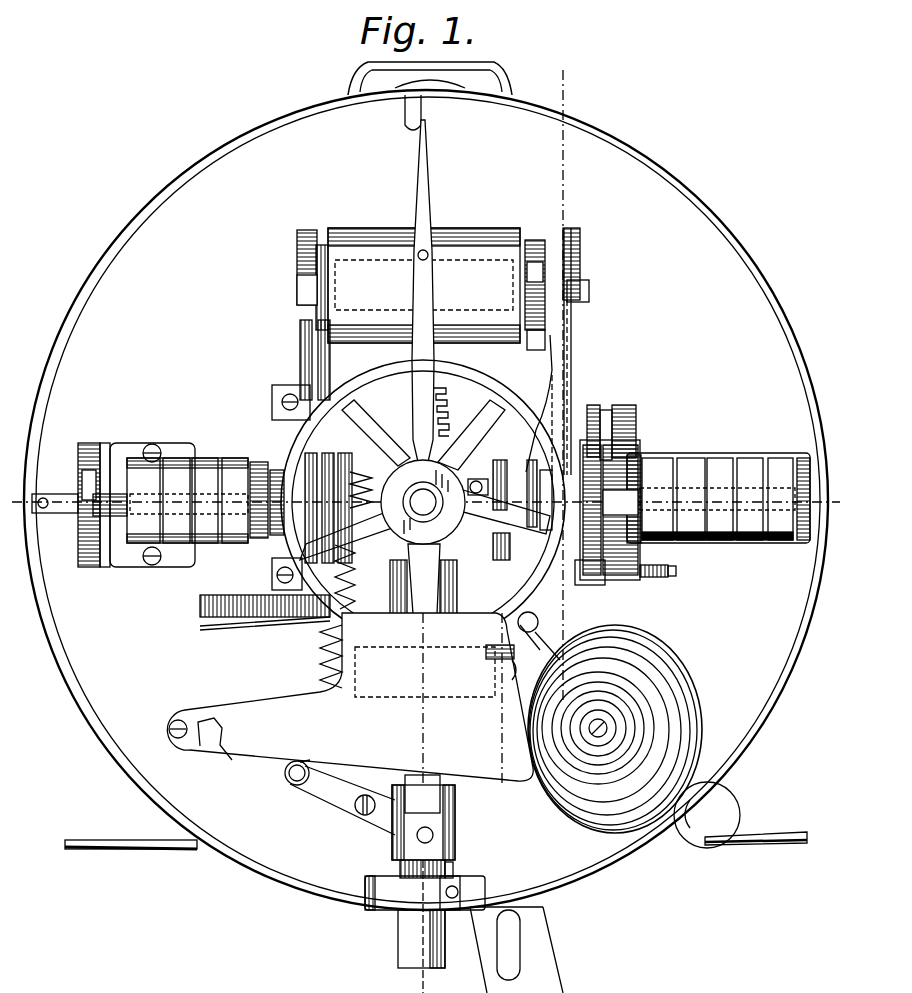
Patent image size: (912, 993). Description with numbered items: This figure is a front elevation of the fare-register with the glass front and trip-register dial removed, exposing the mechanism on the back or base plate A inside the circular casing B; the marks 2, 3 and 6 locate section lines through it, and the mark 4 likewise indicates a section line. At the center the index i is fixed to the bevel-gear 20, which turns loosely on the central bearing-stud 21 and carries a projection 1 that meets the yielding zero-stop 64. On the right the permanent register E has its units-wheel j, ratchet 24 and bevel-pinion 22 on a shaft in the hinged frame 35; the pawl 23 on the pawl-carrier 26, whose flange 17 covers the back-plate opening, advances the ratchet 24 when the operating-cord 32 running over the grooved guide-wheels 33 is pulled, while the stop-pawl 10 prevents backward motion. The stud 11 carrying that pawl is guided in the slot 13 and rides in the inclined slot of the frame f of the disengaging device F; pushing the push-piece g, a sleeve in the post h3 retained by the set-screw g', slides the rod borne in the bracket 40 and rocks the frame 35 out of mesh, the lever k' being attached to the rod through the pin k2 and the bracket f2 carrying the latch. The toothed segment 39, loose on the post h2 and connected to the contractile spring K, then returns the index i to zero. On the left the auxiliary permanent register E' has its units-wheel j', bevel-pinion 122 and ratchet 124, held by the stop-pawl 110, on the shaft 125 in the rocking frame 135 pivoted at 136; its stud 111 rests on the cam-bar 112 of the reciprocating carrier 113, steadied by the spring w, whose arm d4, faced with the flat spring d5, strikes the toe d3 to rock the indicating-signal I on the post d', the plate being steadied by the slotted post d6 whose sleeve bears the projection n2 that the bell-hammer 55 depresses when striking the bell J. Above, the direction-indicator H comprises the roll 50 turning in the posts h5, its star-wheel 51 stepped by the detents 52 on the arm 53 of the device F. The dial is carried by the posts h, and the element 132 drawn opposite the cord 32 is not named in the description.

The circular casing B is at (135, 222).
The back or base plate A is at (476, 475).
The section line 3 3 is at (568, 371).
The section line 2 2 is at (426, 493).
The index i is at (430, 188).
The revoluble roll 50 is at (340, 232).
The direction-indicator H is at (507, 208).
The star-wheel 51 is at (528, 282).
The posts h5 is at (612, 288).
The detents 52 is at (538, 248).
The arm 53 is at (572, 250).
The zero-stop 64 is at (576, 362).
The section line 6 6 is at (530, 588).
The bevel-gear 20 is at (505, 392).
The reciprocating carrier 113 is at (304, 334).
The spring w is at (312, 352).
The post h2 is at (280, 402).
The central bearing-stud 21 is at (423, 502).
The toothed segment 39 is at (450, 404).
The bracket 40 is at (457, 585).
The frame f is at (515, 510).
The section line 4 4 is at (478, 474).
The slot 13 is at (495, 462).
The pin or stud 11 is at (518, 462).
The projection 1 is at (565, 476).
The bevel-pinion 22 is at (572, 508).
The extended stud 111 is at (373, 545).
The ratchet 124 is at (315, 528).
The cam or sustaining bar 112 is at (360, 590).
The stop-pawl 110 is at (272, 575).
The auxiliary permanent register E' is at (163, 491).
The shaft 125 is at (115, 494).
The posts h is at (52, 494).
The rocking frame 135 is at (84, 512).
The pivot 136 is at (92, 568).
The units-wheel j' is at (250, 483).
The bevel-pinion 122 is at (278, 470).
The arm d4 is at (200, 606).
The yielding flat spring d5 is at (210, 630).
The indicating-signal I is at (350, 698).
The contractile spring K is at (318, 658).
The toe d3 is at (212, 748).
The post d' is at (507, 672).
The bell J is at (615, 729).
The bell-hammer 55 is at (540, 625).
The projection n2 is at (572, 612).
The post d6 is at (542, 640).
The permanent register E is at (718, 484).
The units-wheel j is at (785, 439).
The frame 35 is at (636, 460).
The ratchet 24 is at (610, 510).
The flange 17 is at (590, 410).
The pawl-carrier 26 is at (604, 410).
The stop-pawl 10 is at (584, 445).
The pawl 23 is at (582, 582).
The disengaging device F is at (432, 826).
The pin k2 is at (418, 836).
The bracket f2 is at (455, 806).
The set-screw g' is at (470, 860).
The post h3 is at (425, 893).
The push-piece g is at (408, 926).
The lever k' is at (340, 797).
The grooved guide-wheels 33 is at (726, 785).
The operating-cord 32 is at (770, 826).
The handle rod 132 is at (95, 842).